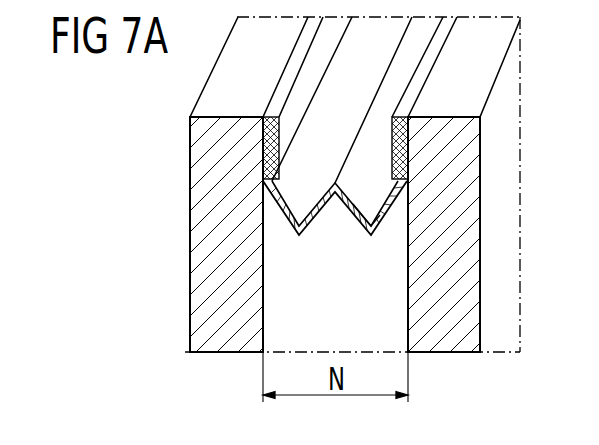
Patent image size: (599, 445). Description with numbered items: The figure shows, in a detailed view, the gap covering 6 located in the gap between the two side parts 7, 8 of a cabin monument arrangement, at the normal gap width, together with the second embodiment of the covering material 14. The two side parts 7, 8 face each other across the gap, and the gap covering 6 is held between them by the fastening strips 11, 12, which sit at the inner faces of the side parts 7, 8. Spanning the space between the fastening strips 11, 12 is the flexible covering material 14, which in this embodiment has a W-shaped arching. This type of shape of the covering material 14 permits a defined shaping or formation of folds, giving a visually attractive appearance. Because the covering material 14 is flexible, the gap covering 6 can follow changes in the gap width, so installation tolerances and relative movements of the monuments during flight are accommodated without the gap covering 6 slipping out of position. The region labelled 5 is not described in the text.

The gap 5 is at (390, 294).
The gap covering 6 is at (331, 232).
The side part 7 is at (190, 215).
The side part 8 is at (465, 223).
The fastening strip 11 is at (279, 170).
The fastening strip 12 is at (393, 160).
The covering material 14 is at (365, 205).